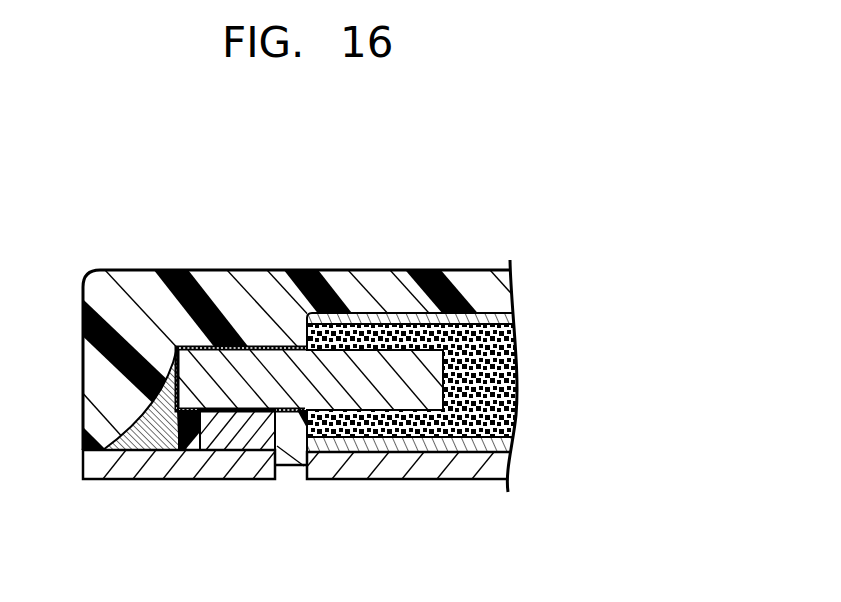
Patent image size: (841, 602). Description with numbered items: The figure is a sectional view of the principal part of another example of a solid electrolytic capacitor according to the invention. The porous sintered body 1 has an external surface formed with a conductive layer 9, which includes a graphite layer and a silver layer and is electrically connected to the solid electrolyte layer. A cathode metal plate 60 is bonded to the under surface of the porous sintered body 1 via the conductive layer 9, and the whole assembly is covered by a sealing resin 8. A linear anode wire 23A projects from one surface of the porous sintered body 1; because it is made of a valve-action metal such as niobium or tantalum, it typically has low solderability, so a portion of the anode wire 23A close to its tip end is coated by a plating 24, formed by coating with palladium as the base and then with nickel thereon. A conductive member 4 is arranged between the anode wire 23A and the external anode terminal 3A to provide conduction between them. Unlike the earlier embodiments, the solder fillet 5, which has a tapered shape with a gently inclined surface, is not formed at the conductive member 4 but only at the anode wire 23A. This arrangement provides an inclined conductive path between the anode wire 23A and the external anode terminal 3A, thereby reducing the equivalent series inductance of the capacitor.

The porous sintered body 1 is at (475, 345).
The external anode terminal 3A is at (112, 480).
The conductive member 4 is at (240, 480).
The solder fillet 5 is at (170, 478).
The sealing resin 8 is at (362, 313).
The conductive layer 9 is at (410, 322).
The anode wire 23A is at (290, 375).
The plating 24 is at (187, 268).
The cathode metal plate 60 is at (438, 480).